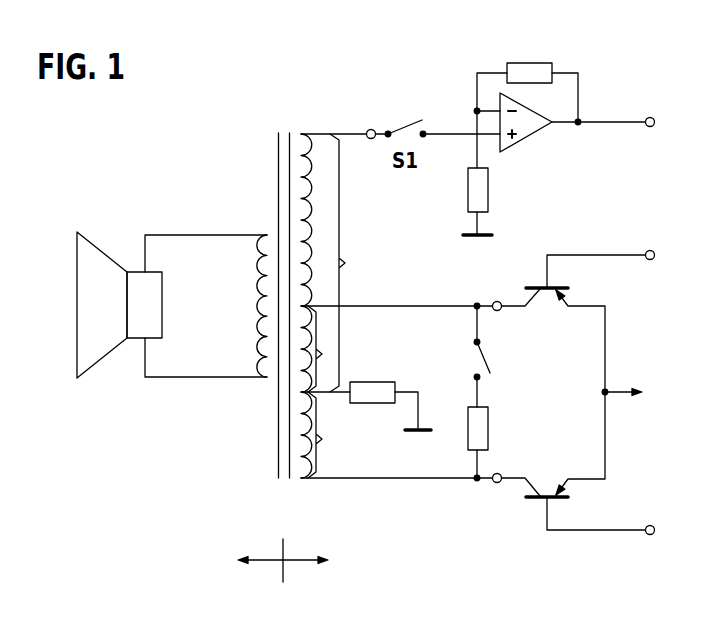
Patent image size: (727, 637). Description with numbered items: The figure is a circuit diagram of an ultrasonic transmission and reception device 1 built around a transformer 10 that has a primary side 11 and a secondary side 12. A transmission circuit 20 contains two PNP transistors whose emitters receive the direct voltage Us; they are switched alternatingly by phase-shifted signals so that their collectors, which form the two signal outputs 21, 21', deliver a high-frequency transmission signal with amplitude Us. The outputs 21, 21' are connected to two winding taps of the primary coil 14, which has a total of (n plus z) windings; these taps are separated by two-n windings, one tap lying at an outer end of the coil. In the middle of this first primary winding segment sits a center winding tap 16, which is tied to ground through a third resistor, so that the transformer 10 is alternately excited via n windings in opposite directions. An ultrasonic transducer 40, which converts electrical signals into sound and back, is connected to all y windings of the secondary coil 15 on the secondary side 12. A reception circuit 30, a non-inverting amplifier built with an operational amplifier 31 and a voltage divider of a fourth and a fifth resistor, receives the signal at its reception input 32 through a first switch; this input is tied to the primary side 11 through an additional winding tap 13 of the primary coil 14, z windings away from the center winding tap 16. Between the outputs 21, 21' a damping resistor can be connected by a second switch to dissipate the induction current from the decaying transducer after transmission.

The ultrasonic transmission and reception device 1 is at (95, 473).
The transformer 10 is at (267, 120).
The primary side 11 is at (307, 568).
The secondary side 12 is at (259, 578).
The additional winding tap 13 is at (306, 130).
The primary coil 14 is at (309, 481).
The secondary coil 15 is at (262, 343).
The center winding tap 16 is at (300, 393).
The transmission circuit 20 is at (572, 559).
The signal output 21 is at (477, 284).
The signal output 21' is at (478, 506).
The reception circuit 30 is at (577, 55).
The operational amplifier 31 is at (531, 138).
The reception input 32 is at (373, 129).
The ultrasonic transducer 40 is at (97, 198).